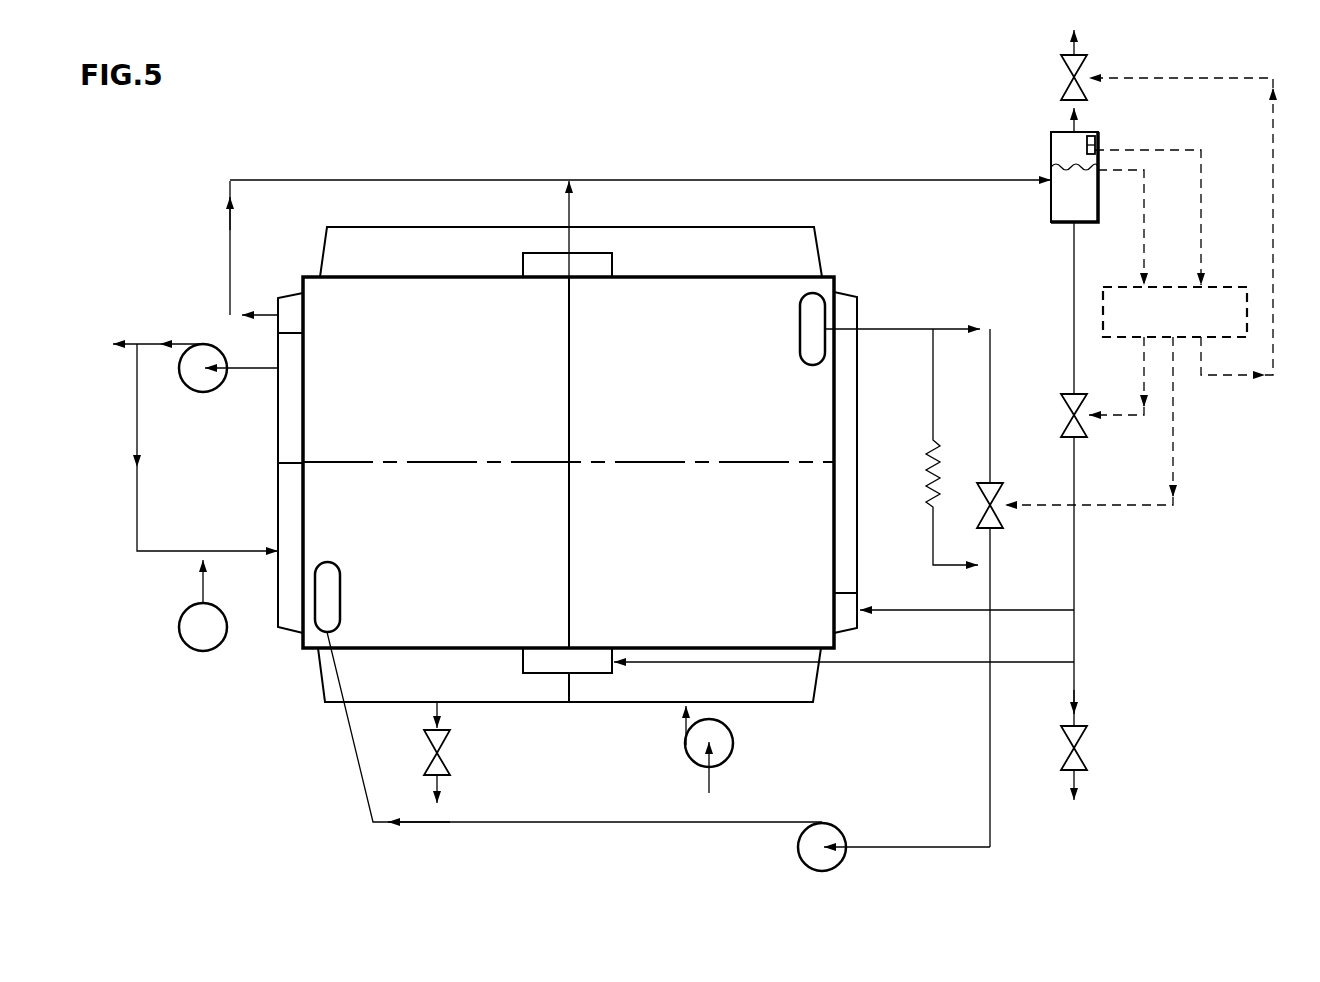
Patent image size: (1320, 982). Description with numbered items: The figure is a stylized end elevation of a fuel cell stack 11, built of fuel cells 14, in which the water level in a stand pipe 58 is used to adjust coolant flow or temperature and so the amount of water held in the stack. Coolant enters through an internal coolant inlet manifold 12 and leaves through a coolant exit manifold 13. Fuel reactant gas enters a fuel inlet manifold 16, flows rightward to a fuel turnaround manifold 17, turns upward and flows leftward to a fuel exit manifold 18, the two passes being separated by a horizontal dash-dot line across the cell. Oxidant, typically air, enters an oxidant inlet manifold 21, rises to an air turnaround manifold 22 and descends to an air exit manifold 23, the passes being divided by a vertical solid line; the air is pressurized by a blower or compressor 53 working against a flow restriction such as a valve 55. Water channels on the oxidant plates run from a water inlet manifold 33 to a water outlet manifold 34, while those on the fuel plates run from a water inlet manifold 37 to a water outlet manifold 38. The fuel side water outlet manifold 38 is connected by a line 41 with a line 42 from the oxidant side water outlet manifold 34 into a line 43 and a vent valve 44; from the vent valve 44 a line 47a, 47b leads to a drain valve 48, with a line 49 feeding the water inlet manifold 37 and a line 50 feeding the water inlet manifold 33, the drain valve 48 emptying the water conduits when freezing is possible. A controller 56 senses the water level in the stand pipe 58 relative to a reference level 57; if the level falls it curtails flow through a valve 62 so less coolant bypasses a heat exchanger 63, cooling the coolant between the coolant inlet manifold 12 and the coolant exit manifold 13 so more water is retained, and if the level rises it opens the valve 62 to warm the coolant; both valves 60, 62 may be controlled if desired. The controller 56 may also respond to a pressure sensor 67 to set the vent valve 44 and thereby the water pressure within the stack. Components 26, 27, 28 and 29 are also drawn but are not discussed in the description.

The fuel cell stack 11 is at (718, 222).
The coolant inlet manifold 12 is at (306, 642).
The coolant exit manifold 13 is at (834, 292).
The fuel cell 14 is at (778, 297).
The fuel inlet manifold 16 is at (283, 587).
The fuel turnaround manifold 17 is at (855, 480).
The fuel exit manifold 18 is at (283, 413).
The oxidant inlet manifold 21 is at (755, 695).
The air turnaround manifold 22 is at (453, 235).
The air exit manifold 23 is at (420, 702).
The pump 26 is at (205, 392).
The recirculation line 27 is at (180, 551).
The hydrogen source 28 is at (185, 610).
The outlet line 29 is at (138, 345).
The water inlet manifold 33 is at (580, 660).
The water outlet manifold 34 is at (543, 267).
The water inlet manifold 37 is at (848, 618).
The water outlet manifold 38 is at (295, 300).
The line 41 is at (230, 272).
The line 42 is at (574, 220).
The line 43 is at (662, 178).
The vent valve 44 is at (1072, 77).
The line 47a is at (1072, 312).
The line 47b is at (1076, 583).
The drain valve 48 is at (1070, 748).
The line 49 is at (1038, 610).
The line 50 is at (905, 664).
The blower or compressor 53 is at (715, 765).
The valve 55 is at (440, 753).
The controller 56 is at (1218, 287).
The reference level 57 is at (1058, 167).
The stand pipe 58 is at (1100, 192).
The valve 60 is at (1070, 415).
The valve 62 is at (985, 505).
The heat exchanger 63 is at (940, 462).
The pressure sensor 67 is at (1092, 136).